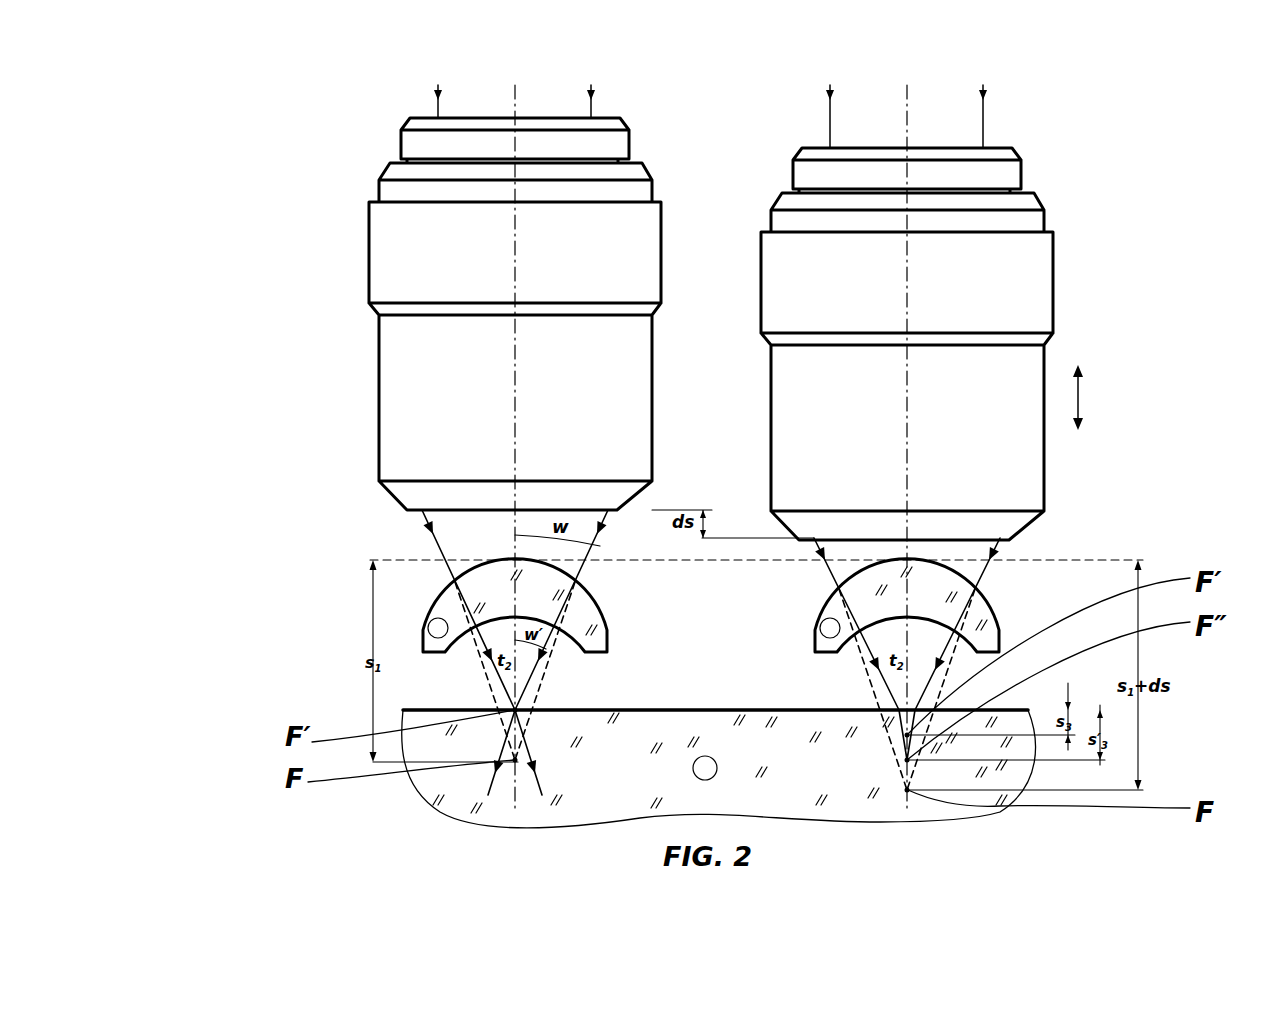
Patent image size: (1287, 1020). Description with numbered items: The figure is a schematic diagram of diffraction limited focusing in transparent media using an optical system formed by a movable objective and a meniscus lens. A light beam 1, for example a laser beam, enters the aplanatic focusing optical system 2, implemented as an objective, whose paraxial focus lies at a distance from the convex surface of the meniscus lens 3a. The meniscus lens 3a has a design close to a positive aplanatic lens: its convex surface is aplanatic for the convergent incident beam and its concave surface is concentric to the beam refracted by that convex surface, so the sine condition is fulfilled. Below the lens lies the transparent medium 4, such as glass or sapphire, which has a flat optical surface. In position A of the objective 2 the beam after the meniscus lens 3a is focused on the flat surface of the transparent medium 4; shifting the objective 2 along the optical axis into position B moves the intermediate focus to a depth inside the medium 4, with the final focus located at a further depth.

The light beam 1 is at (430, 97).
The focusing optical system 2 is at (378, 345).
The meniscus lens 3a is at (432, 612).
The transparent medium 4 is at (438, 803).